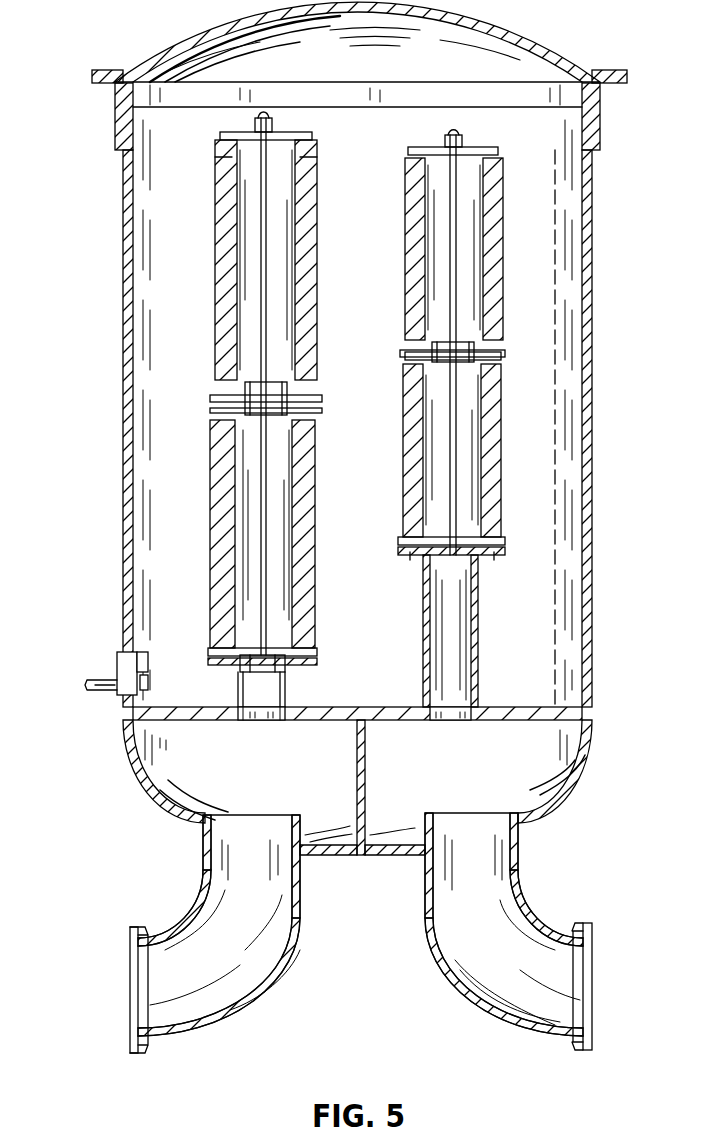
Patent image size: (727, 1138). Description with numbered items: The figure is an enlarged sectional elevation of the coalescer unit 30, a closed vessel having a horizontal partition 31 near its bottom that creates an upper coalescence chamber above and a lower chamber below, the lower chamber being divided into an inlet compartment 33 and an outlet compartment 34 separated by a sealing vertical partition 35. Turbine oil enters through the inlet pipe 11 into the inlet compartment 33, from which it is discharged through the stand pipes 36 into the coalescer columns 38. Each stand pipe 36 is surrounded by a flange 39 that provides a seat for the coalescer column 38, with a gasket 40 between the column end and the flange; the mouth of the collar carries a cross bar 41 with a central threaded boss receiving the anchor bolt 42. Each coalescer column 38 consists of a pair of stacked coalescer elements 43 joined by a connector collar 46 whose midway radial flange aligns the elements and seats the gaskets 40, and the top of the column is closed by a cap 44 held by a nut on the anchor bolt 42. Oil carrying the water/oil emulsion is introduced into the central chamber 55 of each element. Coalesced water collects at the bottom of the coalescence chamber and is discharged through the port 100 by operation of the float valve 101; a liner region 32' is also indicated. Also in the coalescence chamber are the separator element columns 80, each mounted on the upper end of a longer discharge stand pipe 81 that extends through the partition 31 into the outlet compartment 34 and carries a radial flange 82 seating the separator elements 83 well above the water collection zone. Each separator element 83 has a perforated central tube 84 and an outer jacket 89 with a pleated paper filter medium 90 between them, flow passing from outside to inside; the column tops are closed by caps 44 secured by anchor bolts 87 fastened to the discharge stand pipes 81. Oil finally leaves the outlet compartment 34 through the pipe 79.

The inlet pipe 11 is at (272, 984).
The coalescer unit 30 is at (606, 240).
The horizontal partition 31 is at (564, 707).
The vessel interior liner 32' is at (596, 427).
The inlet compartment 33 is at (140, 782).
The outlet compartment 34 is at (578, 788).
The vertical partition 35 is at (366, 797).
The stand pipe 36 is at (292, 696).
The coalescer column 38 is at (318, 642).
The flange 39 is at (302, 674).
The gasket 40 is at (234, 134).
The cross bar 41 is at (264, 702).
The anchor bolt 42 is at (305, 542).
The coalescer element 43 is at (311, 380).
The cap 44 is at (295, 132).
The connector collar 46 is at (217, 158).
The central chamber 55 is at (245, 497).
The pipe 79 is at (452, 978).
The separator element column 80 is at (504, 202).
The discharge stand pipe 81 is at (478, 630).
The radial flange 82 is at (488, 557).
The separator element 83 is at (500, 264).
The central tube 84 is at (430, 302).
The anchor bolt 87 is at (498, 505).
The outer jacket 89 is at (492, 533).
The pleated paper filter medium 90 is at (494, 294).
The port 100 is at (160, 664).
The float valve 101 is at (95, 697).